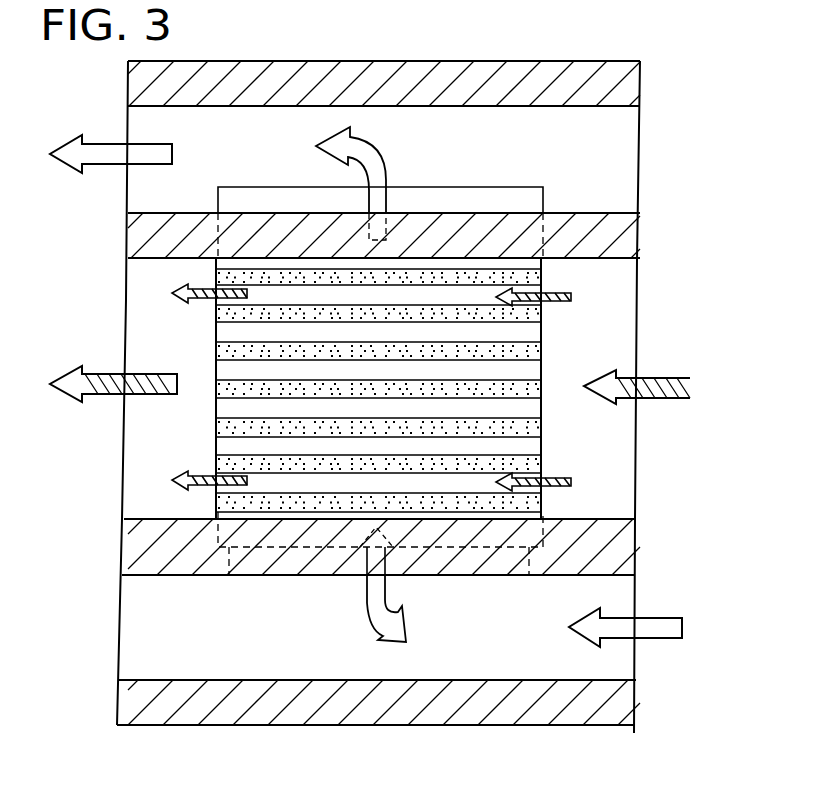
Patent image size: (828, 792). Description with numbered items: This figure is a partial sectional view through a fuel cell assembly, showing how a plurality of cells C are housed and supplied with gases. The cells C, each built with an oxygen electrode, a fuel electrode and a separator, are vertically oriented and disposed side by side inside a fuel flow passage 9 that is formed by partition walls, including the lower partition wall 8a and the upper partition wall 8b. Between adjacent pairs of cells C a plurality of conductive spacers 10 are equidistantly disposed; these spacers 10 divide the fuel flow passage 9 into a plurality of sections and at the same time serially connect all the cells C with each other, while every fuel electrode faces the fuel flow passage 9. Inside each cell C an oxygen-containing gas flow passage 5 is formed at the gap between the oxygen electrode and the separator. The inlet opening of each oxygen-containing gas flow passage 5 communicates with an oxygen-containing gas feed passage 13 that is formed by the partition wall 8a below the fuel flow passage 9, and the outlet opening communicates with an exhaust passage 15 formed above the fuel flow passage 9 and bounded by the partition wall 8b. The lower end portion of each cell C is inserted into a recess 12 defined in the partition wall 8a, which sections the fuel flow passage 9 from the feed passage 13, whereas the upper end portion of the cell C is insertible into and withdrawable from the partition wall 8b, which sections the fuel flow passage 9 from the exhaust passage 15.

The oxygen-containing gas flow passage 5 is at (398, 618).
The partition wall 8a is at (624, 519).
The partition wall 8b is at (617, 215).
The fuel flow passage 9 is at (538, 370).
The conductive spacers 10 is at (216, 314).
The recess 12 is at (525, 540).
The oxygen-containing gas feed passage 13 is at (360, 624).
The exhaust passage 15 is at (397, 181).
The cell C is at (557, 317).